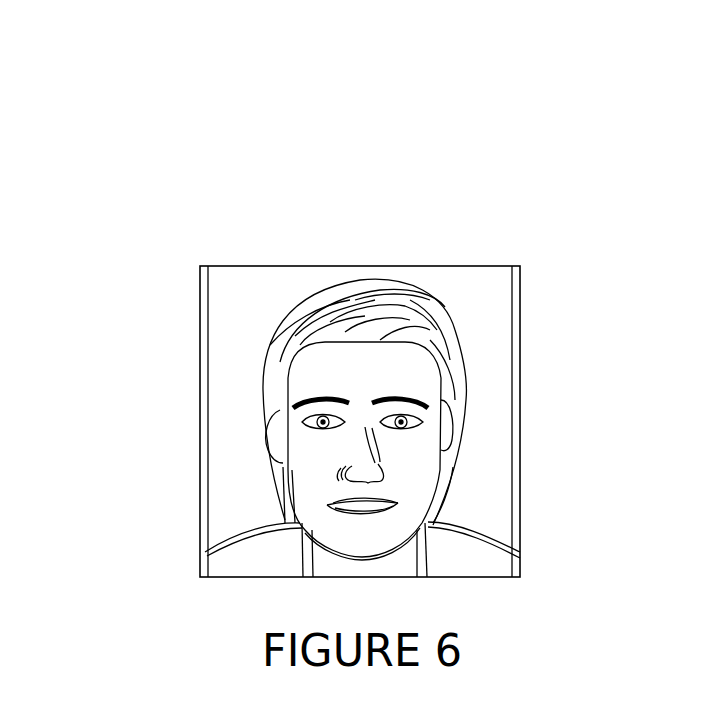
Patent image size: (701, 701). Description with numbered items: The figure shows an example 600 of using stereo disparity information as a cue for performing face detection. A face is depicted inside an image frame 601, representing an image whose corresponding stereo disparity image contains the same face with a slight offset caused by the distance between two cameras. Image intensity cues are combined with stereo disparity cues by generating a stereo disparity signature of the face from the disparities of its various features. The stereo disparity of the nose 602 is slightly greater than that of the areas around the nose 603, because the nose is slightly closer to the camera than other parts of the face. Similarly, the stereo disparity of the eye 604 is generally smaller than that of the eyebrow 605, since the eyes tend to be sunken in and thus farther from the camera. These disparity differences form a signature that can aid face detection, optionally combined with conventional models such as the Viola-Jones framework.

The example 600 is at (112, 118).
The image frame 601 is at (228, 266).
The nose 602 is at (385, 463).
The areas around the nose 603 is at (372, 488).
The eye 604 is at (422, 420).
The eyebrow 605 is at (407, 392).